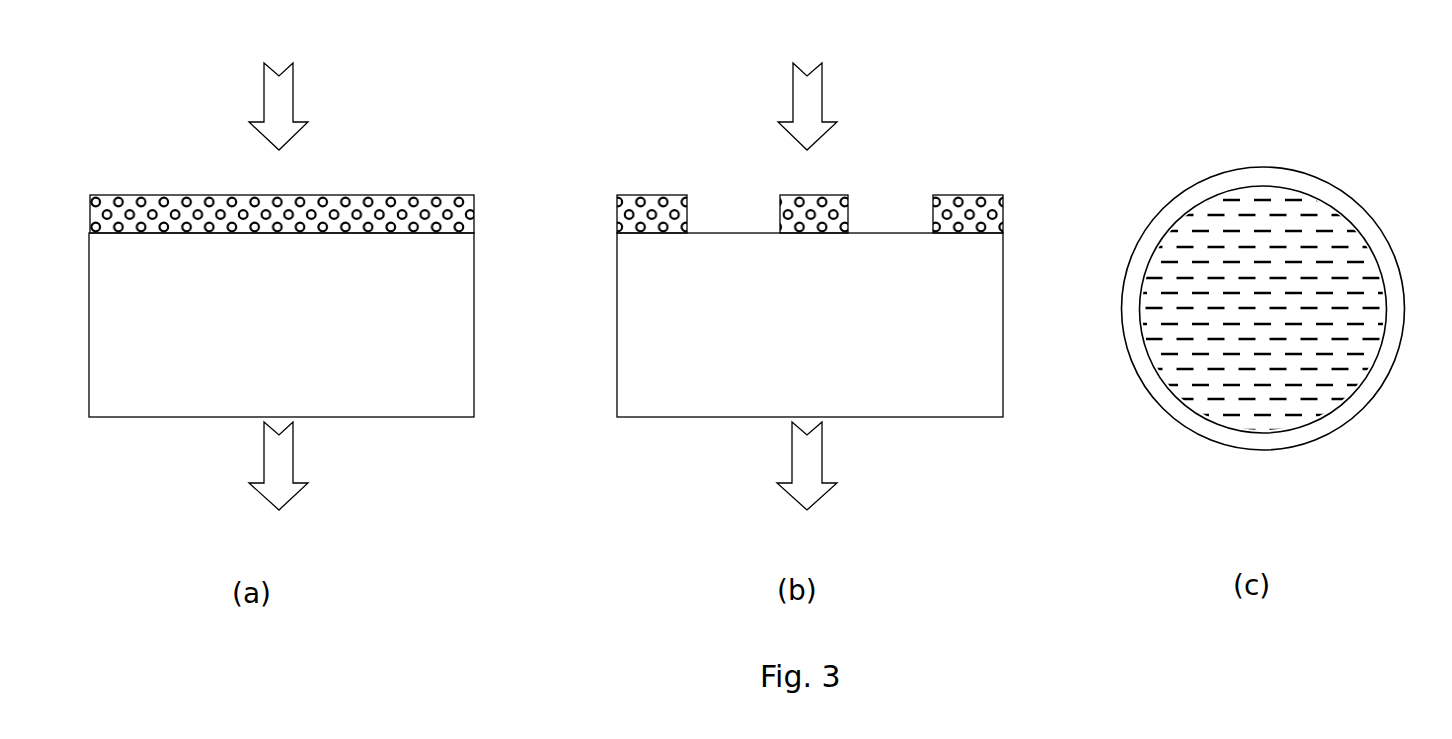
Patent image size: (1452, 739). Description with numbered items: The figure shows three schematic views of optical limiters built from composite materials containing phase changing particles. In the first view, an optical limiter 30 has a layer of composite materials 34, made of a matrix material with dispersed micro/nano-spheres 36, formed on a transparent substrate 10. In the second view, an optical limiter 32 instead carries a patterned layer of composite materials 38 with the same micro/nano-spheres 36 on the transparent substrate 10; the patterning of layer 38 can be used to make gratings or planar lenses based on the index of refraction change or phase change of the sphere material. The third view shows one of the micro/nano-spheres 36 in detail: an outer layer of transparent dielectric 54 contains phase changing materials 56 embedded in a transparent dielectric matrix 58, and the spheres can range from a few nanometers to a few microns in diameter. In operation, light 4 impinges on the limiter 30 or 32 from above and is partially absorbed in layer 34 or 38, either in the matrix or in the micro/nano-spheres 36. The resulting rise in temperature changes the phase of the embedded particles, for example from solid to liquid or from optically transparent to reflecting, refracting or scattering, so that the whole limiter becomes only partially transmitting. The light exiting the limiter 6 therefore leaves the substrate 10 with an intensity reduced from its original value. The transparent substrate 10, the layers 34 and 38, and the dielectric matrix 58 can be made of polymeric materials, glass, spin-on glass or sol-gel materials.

The light 4 is at (543, 106).
The light exiting the limiter 6 is at (543, 466).
The transparent substrate 10 is at (168, 402).
The optical limiter 30 is at (484, 153).
The optical limiter 32 is at (1013, 155).
The layer of composite materials 34 is at (132, 203).
The micro/nano-spheres 36 is at (205, 233).
The patterned layer of composite materials 38 is at (648, 196).
The outer layer of transparent dielectric 54 is at (1388, 263).
The phase changing materials 56 is at (1210, 415).
The transparent dielectric matrix 58 is at (1302, 421).